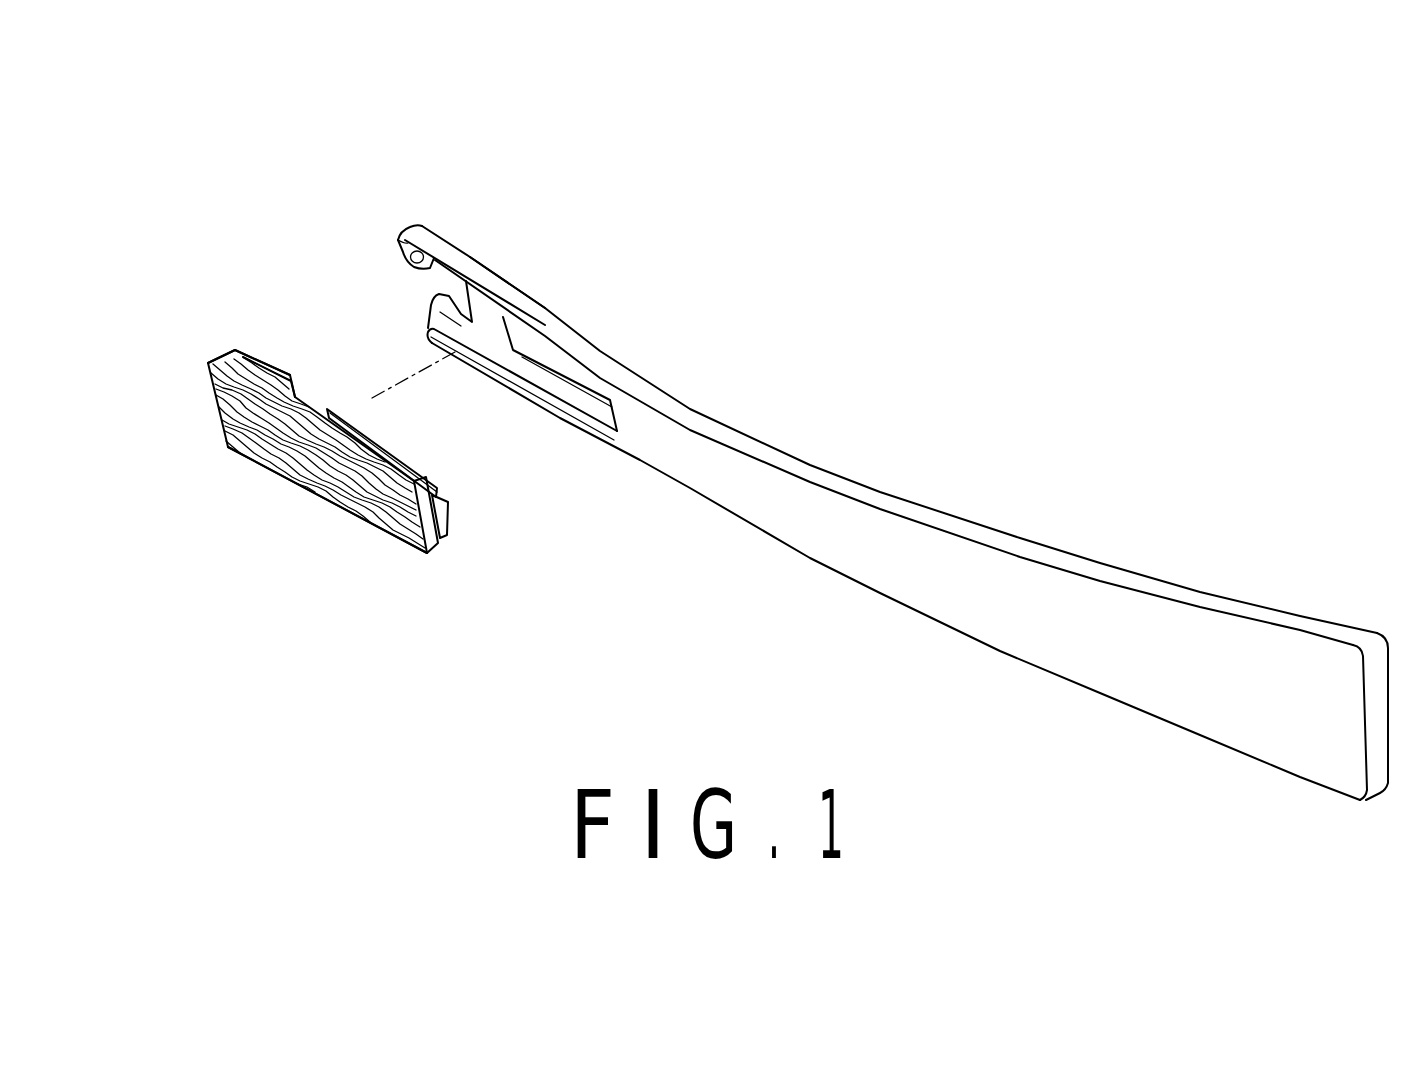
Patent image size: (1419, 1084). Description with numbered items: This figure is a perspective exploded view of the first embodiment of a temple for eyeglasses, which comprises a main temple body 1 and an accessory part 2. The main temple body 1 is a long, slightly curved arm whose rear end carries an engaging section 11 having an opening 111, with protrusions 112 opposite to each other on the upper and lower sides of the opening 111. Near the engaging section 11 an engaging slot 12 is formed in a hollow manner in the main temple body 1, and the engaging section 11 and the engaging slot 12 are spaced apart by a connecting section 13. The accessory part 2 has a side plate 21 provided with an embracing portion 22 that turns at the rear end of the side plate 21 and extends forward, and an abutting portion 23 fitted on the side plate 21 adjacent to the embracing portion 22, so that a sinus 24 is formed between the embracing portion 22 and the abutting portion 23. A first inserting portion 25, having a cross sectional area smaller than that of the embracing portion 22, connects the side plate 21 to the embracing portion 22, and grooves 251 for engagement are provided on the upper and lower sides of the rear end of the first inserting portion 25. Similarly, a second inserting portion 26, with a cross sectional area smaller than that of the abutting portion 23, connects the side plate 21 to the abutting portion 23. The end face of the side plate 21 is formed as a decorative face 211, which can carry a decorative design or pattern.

The main temple body 1 is at (817, 448).
The engaging section 11 is at (455, 267).
The opening 111 is at (490, 298).
The protrusions 112 is at (434, 283).
The engaging slot 12 is at (572, 374).
The connecting section 13 is at (487, 293).
The accessory part 2 is at (213, 418).
The side plate 21 is at (425, 537).
The decorative face 211 is at (358, 485).
The embracing portion 22 is at (267, 355).
The abutting portion 23 is at (428, 475).
The sinus 24 is at (295, 385).
The first inserting portion 25 is at (275, 365).
The grooves 251 is at (237, 348).
The second inserting portion 26 is at (360, 432).